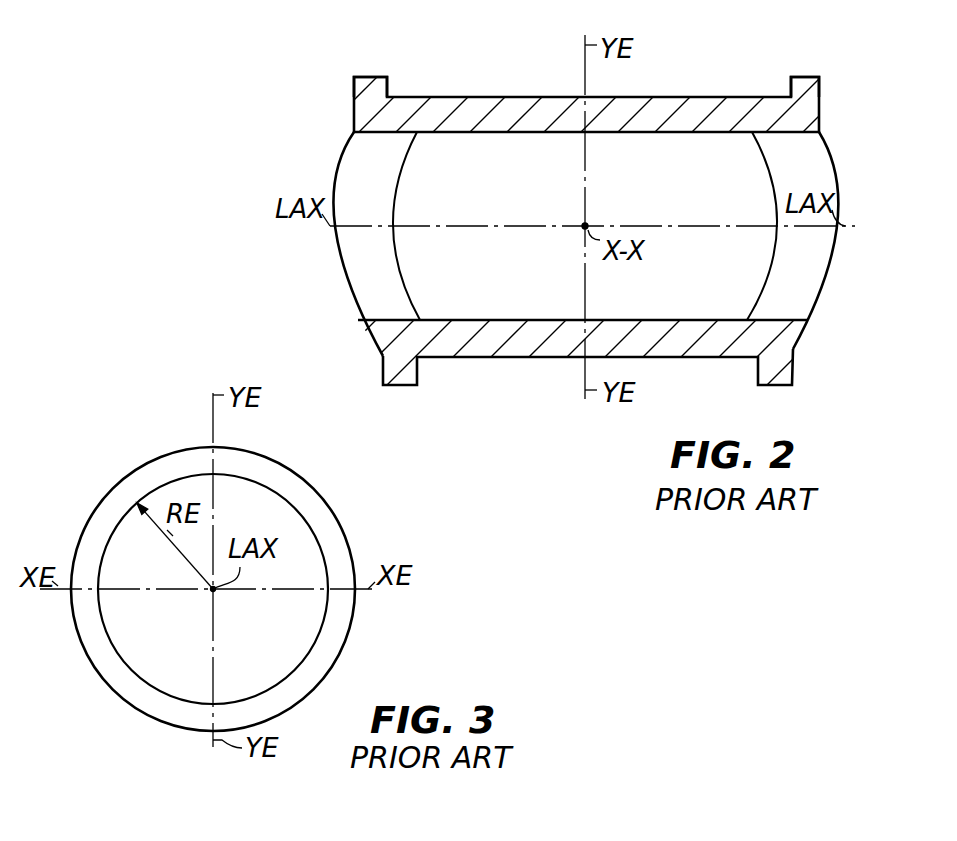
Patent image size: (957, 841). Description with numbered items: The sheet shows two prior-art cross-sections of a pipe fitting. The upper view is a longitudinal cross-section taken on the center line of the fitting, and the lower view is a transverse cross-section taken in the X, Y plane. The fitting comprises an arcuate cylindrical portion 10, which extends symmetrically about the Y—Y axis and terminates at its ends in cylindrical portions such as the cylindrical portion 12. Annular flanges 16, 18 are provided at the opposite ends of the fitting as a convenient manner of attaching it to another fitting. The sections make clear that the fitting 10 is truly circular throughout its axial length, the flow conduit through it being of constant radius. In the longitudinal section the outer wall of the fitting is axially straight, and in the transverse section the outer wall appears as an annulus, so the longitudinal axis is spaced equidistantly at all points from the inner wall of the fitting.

In FIG. 2, the arcuate cylindrical portion 10 is at (714, 80).
In FIG. 3, the arcuate cylindrical portion 10 is at (318, 500).
In FIG. 2, the cylindrical portion 12 is at (820, 163).
In FIG. 2, the annular flange 16 is at (808, 77).
In FIG. 2, the annular flange 18 is at (376, 77).